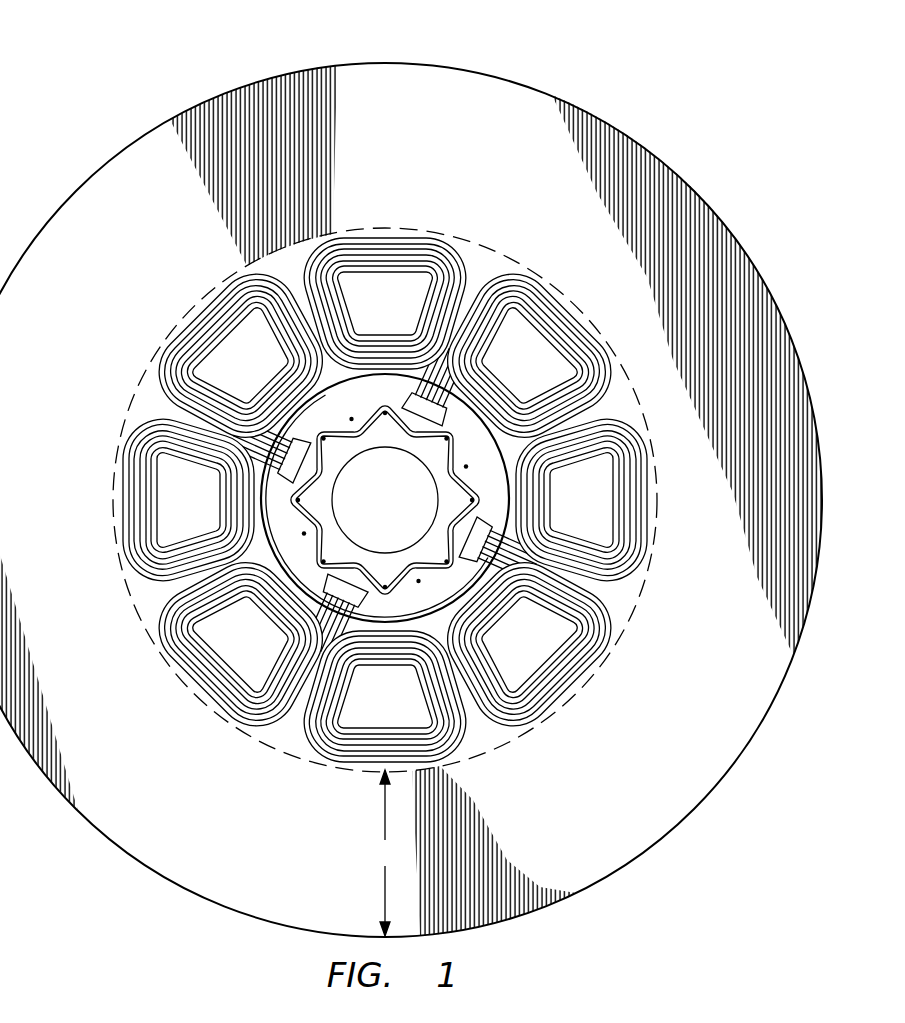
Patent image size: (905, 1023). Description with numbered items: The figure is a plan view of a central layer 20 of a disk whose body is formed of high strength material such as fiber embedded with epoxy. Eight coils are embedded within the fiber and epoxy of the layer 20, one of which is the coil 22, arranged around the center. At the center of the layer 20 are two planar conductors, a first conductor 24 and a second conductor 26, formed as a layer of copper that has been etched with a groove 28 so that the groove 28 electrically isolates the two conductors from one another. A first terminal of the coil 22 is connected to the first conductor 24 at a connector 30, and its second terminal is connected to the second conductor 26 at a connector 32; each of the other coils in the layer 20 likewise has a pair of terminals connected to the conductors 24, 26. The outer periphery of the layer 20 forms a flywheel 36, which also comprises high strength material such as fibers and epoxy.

The central layer 20 is at (163, 70).
The coil 22 is at (518, 272).
The first conductor 24 is at (300, 521).
The second conductor 26 is at (492, 742).
The groove 28 is at (358, 565).
The connector 30 is at (403, 410).
The connector 32 is at (444, 440).
The flywheel 36 is at (385, 853).